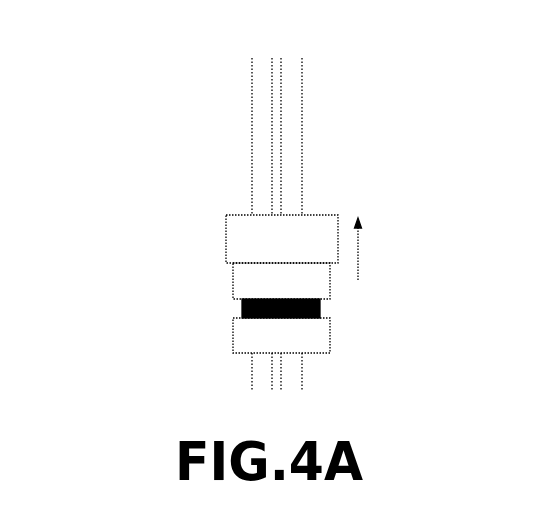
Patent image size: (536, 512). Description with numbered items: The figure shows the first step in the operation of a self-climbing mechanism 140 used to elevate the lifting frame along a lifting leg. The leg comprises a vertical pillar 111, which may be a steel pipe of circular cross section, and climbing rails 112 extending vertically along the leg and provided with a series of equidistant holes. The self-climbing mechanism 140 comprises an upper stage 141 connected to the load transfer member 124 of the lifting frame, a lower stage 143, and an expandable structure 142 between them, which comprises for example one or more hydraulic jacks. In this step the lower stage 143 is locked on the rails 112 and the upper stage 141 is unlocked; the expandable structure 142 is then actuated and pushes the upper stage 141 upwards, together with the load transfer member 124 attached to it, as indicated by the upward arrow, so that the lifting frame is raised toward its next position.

The vertical pillar 111 is at (260, 125).
The climbing rails 112 is at (277, 102).
The load transfer member 124 is at (252, 228).
The self-climbing mechanism 140 is at (198, 274).
The upper stage 141 is at (252, 277).
The expandable structure 142 is at (245, 308).
The lower stage 143 is at (260, 332).